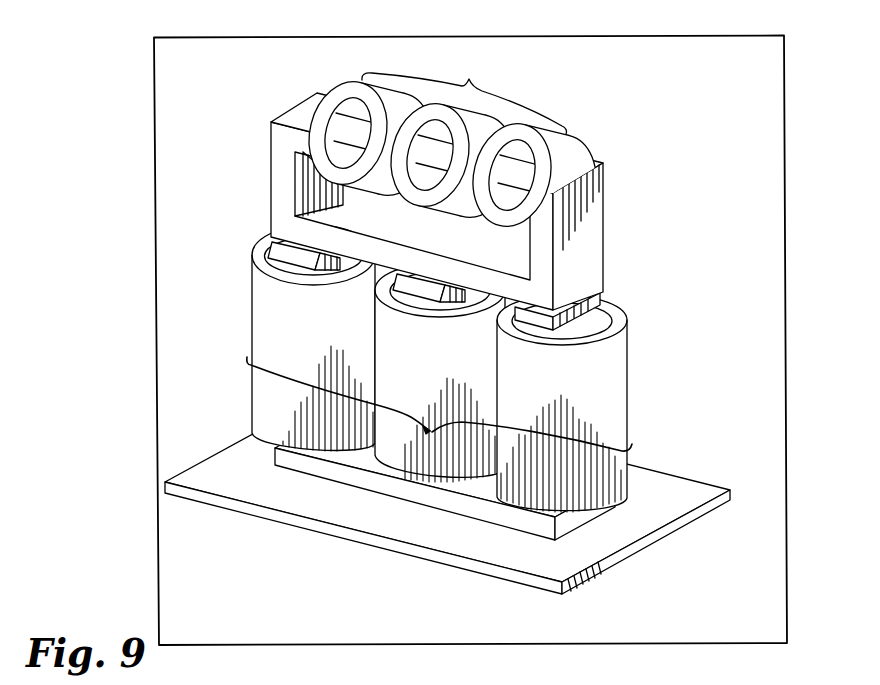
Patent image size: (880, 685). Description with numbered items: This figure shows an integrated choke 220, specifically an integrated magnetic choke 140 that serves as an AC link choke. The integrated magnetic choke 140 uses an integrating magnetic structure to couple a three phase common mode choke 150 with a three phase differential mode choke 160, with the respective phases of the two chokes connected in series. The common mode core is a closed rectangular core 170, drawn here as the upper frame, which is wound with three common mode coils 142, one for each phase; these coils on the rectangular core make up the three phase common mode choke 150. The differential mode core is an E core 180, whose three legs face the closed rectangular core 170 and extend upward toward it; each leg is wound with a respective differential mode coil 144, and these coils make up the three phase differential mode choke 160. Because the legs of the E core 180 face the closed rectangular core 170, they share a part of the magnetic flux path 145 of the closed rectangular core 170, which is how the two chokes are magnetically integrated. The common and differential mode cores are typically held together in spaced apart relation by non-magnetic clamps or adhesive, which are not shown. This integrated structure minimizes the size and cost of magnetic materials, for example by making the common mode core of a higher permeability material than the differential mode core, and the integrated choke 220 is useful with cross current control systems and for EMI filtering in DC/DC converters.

The integrated magnetic choke 140 is at (736, 634).
The common mode coil 142 is at (488, 150).
The differential mode coil 144 is at (577, 374).
The magnetic flux path of the closed rectangular core 145 is at (280, 213).
The three phase common mode choke 150 is at (464, 96).
The three phase differential mode choke 160 is at (431, 432).
The closed rectangular core 170 is at (543, 272).
The E core 180 is at (567, 525).
The integrated choke 220 is at (757, 168).